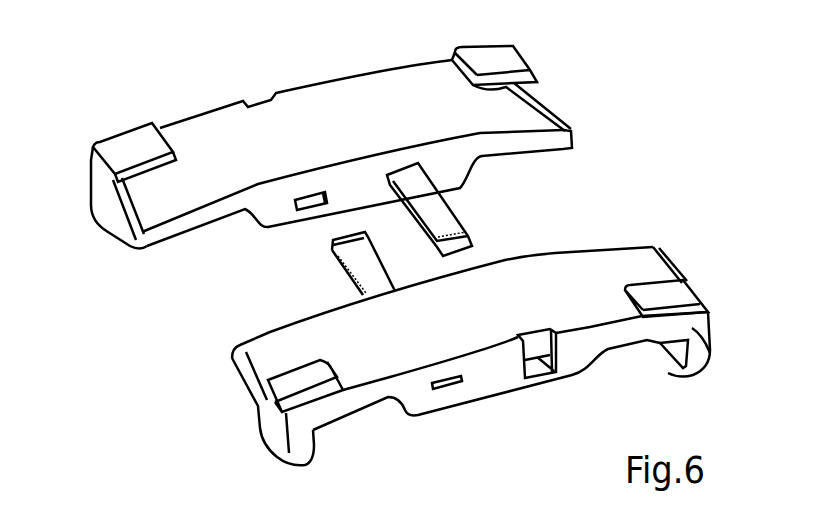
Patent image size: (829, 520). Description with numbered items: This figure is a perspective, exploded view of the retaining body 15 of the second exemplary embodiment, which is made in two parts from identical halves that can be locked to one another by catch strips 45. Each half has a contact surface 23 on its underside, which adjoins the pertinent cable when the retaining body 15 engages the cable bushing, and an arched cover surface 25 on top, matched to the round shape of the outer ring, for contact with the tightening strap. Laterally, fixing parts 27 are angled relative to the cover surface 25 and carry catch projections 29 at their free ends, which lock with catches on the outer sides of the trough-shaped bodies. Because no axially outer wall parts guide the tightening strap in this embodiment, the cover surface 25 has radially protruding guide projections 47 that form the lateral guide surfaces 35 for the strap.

The retaining body 15 is at (190, 84).
The contact surface 23 is at (492, 400).
The cover surface 25 is at (303, 120).
The fixing part 27 is at (93, 197).
The catch projection 29 is at (667, 377).
The lateral guide surface 35 is at (143, 162).
The catch strip 45 is at (437, 210).
The guide projection 47 is at (137, 143).